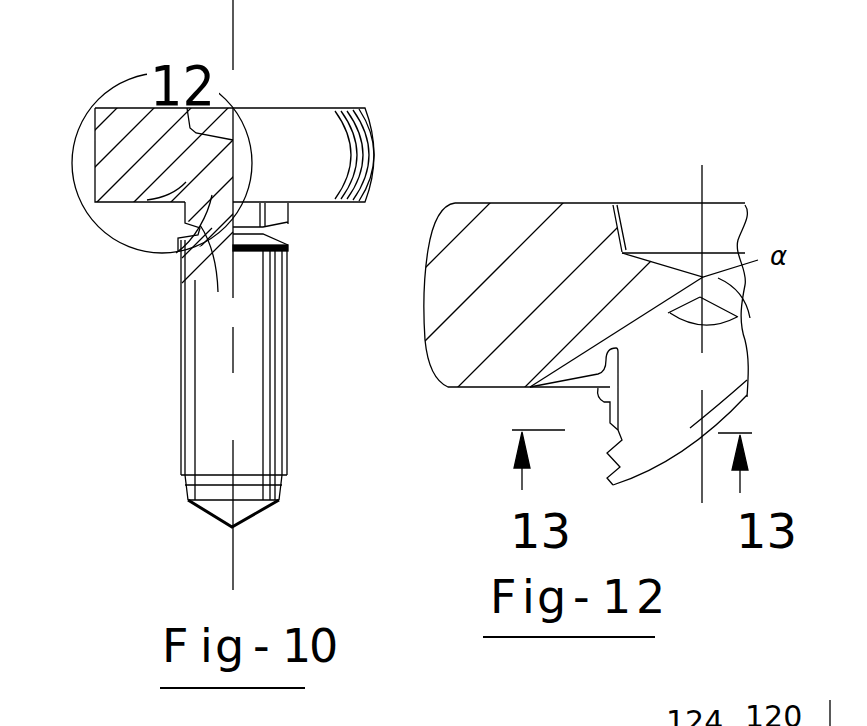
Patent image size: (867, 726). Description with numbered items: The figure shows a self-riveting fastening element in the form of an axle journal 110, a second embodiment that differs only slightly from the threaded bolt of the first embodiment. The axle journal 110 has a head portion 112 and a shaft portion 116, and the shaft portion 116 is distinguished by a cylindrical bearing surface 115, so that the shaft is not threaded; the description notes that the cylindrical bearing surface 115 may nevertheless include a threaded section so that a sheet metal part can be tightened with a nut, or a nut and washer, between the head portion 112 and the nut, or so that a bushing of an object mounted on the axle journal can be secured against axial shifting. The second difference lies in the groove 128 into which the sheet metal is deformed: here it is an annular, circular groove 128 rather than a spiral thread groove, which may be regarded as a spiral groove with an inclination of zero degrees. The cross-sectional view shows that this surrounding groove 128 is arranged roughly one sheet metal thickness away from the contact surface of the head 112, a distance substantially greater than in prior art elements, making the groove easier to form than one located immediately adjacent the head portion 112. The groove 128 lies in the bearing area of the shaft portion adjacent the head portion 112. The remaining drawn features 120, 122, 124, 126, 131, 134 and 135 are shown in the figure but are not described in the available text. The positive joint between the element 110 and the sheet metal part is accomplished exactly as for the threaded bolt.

In FIG. 10, the axle journal 110 is at (138, 300).
In FIG. 10, the head portion 112 is at (380, 196).
In FIG. 10, the cylindrical bearing surface 115 is at (180, 393).
In FIG. 10, the shaft portion 116 is at (273, 503).
In FIG. 12, the body 120 is at (572, 359).
In FIG. 12, the stud head 122 is at (592, 369).
In FIG. 10, the collar 124 is at (180, 223).
In FIG. 12, the collar 124 is at (672, 313).
In FIG. 10, the washer 126 is at (291, 236).
In FIG. 12, the washer 126 is at (618, 425).
In FIG. 10, the annular groove 128 is at (247, 235).
In FIG. 12, the annular groove 128 is at (620, 427).
In FIG. 12, the bottom surface 131 is at (490, 393).
In FIG. 12, the insert 134 is at (624, 246).
In FIG. 10, the axis 135 is at (227, 550).